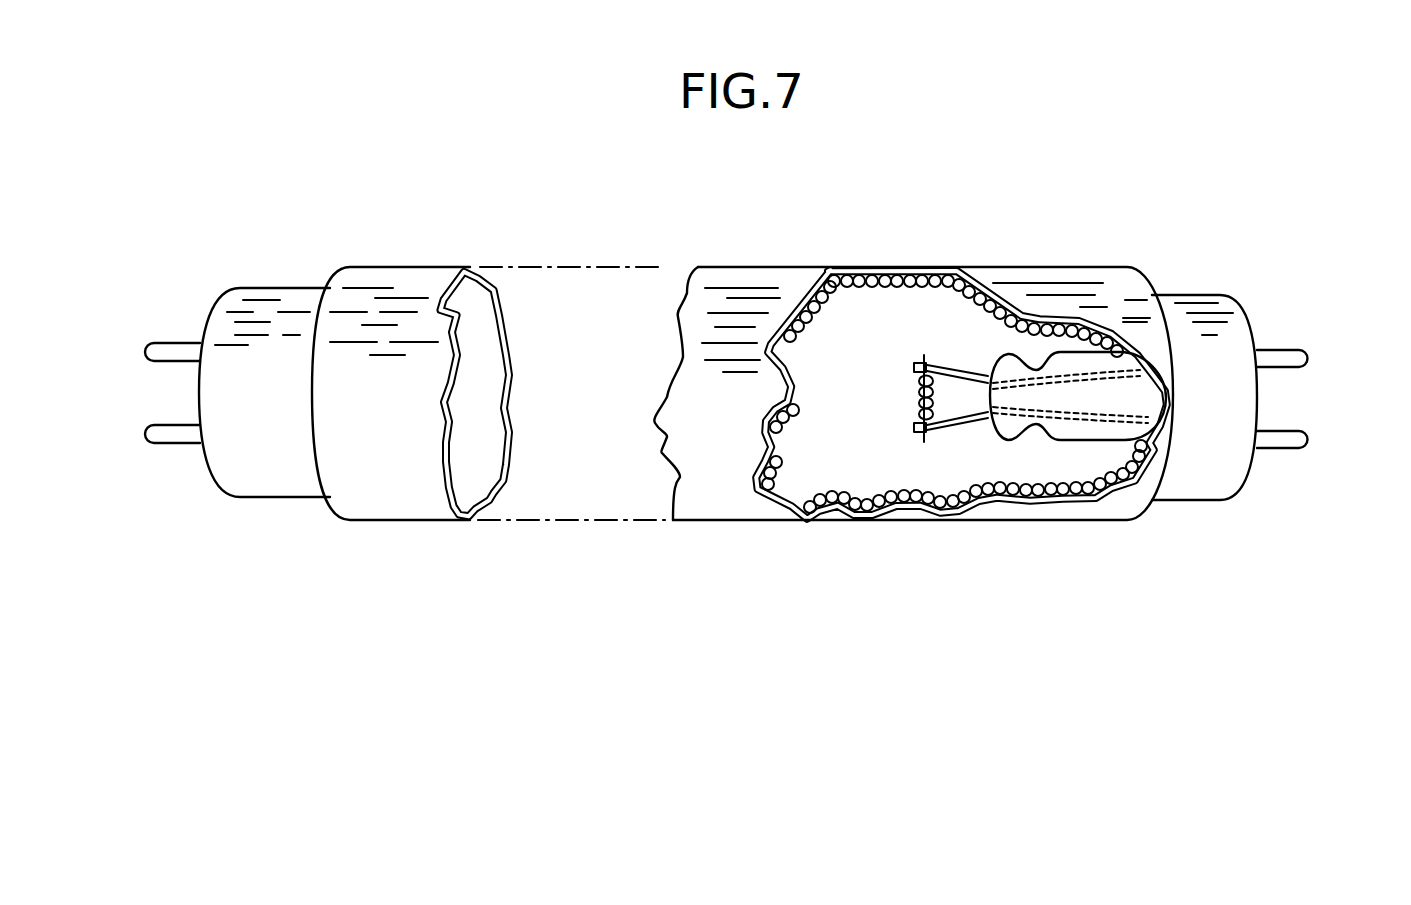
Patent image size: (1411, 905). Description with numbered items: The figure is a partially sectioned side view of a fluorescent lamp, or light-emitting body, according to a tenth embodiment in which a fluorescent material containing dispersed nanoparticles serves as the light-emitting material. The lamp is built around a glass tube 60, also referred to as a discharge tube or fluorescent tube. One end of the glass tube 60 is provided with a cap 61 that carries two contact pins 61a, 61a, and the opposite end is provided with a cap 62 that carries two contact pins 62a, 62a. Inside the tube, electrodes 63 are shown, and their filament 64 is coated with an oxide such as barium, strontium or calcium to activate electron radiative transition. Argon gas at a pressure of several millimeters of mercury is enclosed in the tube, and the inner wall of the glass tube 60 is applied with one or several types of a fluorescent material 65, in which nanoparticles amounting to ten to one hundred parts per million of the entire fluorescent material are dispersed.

The glass tube 60 is at (413, 266).
The cap 61 is at (287, 497).
The contact pins 61a is at (160, 446).
The cap 62 is at (1183, 295).
The contact pins 62a is at (1283, 449).
The electrodes 63 is at (1012, 438).
The filament 64 is at (917, 403).
The fluorescent material 65 is at (888, 282).